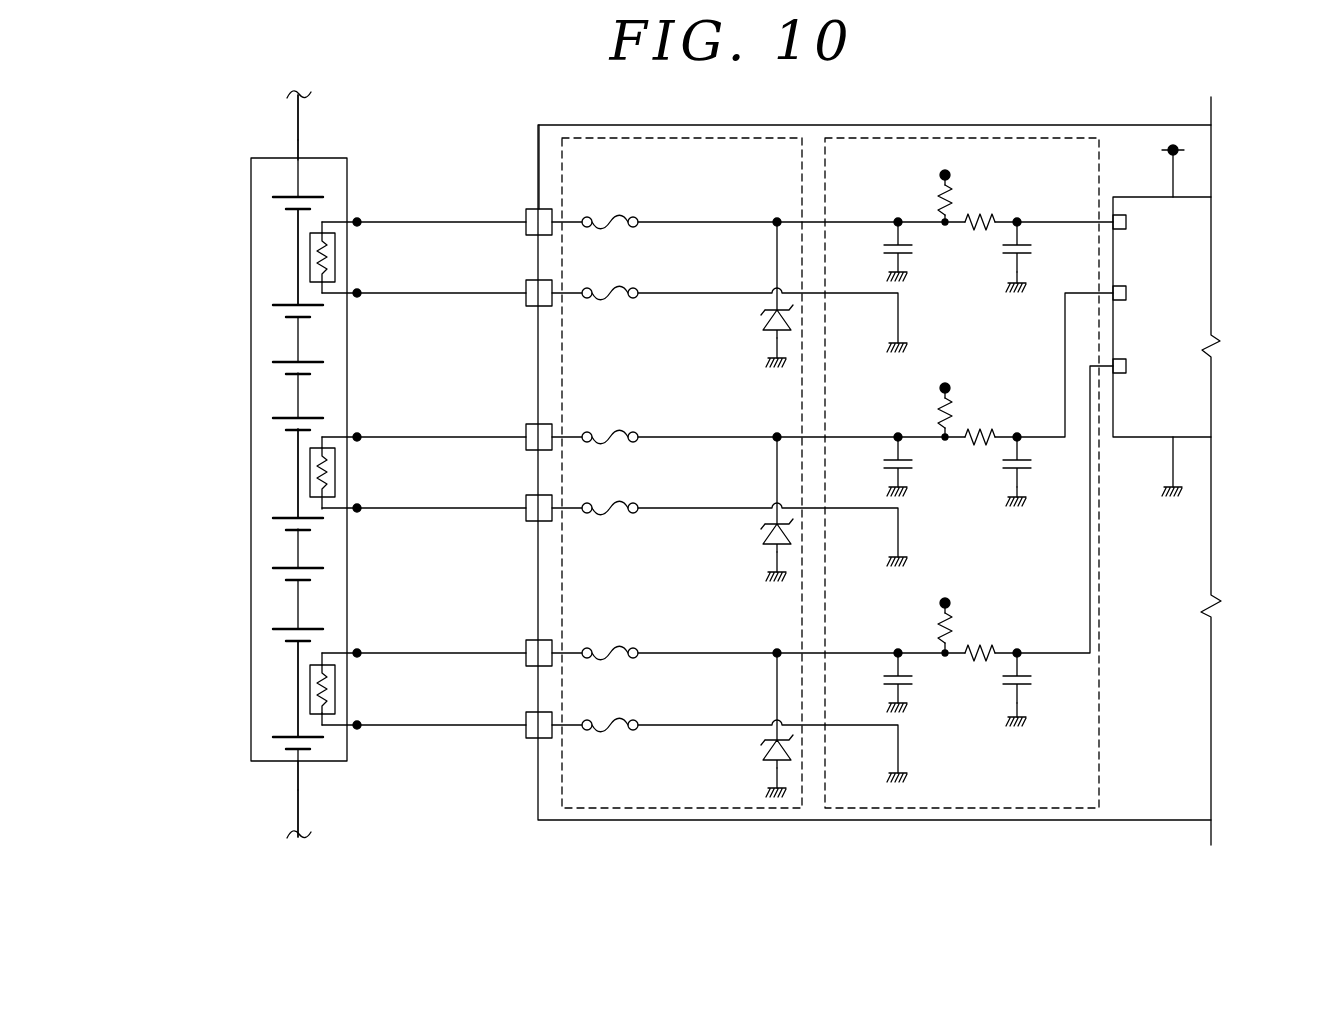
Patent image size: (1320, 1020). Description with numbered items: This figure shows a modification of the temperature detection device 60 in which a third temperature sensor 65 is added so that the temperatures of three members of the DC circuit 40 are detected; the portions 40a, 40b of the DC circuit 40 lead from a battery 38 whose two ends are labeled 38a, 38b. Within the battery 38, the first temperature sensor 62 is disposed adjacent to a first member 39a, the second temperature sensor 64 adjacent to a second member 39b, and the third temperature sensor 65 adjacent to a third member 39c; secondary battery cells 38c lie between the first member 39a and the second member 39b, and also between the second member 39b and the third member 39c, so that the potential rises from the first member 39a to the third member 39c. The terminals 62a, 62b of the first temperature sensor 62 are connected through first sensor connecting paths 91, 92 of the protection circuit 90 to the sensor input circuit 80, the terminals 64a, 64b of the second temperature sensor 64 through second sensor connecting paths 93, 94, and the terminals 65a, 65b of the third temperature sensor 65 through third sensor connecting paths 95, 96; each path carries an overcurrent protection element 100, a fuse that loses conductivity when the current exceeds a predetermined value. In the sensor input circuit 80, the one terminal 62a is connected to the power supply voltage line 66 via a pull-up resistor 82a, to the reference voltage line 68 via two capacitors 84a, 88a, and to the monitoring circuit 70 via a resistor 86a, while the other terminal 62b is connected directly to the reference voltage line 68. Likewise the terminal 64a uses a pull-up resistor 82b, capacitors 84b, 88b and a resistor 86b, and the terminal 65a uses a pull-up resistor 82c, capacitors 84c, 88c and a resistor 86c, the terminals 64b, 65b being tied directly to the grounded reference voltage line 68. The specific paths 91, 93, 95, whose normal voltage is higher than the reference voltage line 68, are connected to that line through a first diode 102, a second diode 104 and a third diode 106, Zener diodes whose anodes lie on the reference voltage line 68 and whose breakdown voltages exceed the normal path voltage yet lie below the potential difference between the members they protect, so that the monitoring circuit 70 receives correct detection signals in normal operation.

The battery 38 is at (251, 396).
The negative terminal of battery 38a is at (298, 770).
The positive terminal of battery 38b is at (298, 155).
The secondary battery cells 38c is at (290, 518).
The first member 39a is at (298, 688).
The second member 39b is at (298, 460).
The third member 39c is at (298, 258).
The DC circuit 40 is at (332, 136).
The negative output line of battery pack 40a is at (298, 806).
The positive output line of battery pack 40b is at (298, 130).
The temperature detection device 60 is at (508, 150).
The first temperature sensor 62 is at (335, 693).
The one terminal of first temperature sensor 62a is at (357, 653).
The other terminal of first temperature sensor 62b is at (357, 725).
The second temperature sensor 64 is at (335, 478).
The one terminal of second temperature sensor 64a is at (357, 437).
The other terminal of second temperature sensor 64b is at (357, 508).
The third temperature sensor 65 is at (335, 262).
The one terminal of third temperature sensor 65a is at (357, 222).
The other terminal of third temperature sensor 65b is at (357, 293).
The power supply voltage line 66 is at (945, 175).
The reference voltage line 68 is at (890, 272).
The monitoring circuit 70 is at (1211, 262).
The sensor input circuit 80 is at (844, 138).
The pull-up resistor 82a is at (953, 615).
The pull-up resistor 82b is at (953, 400).
The pull-up resistor 82c is at (953, 188).
The capacitor 84a is at (1020, 688).
The capacitor 84b is at (1020, 473).
The capacitor 84c is at (1020, 258).
The resistor 86a is at (970, 660).
The resistor 86b is at (970, 444).
The resistor 86c is at (970, 230).
The capacitor 88a is at (890, 676).
The capacitor 88b is at (890, 460).
The capacitor 88c is at (890, 245).
The protection circuit 90 is at (614, 138).
The specific first sensor connecting path 91 is at (700, 653).
The first sensor connecting path 92 is at (700, 725).
The specific second sensor connecting path 93 is at (700, 437).
The second sensor connecting path 94 is at (700, 508).
The specific third sensor connecting path 95 is at (700, 222).
The third sensor connecting path 96 is at (700, 293).
The overcurrent protection element 100 is at (620, 216).
The first diode 102 is at (763, 755).
The second diode 104 is at (763, 537).
The third diode 106 is at (763, 322).